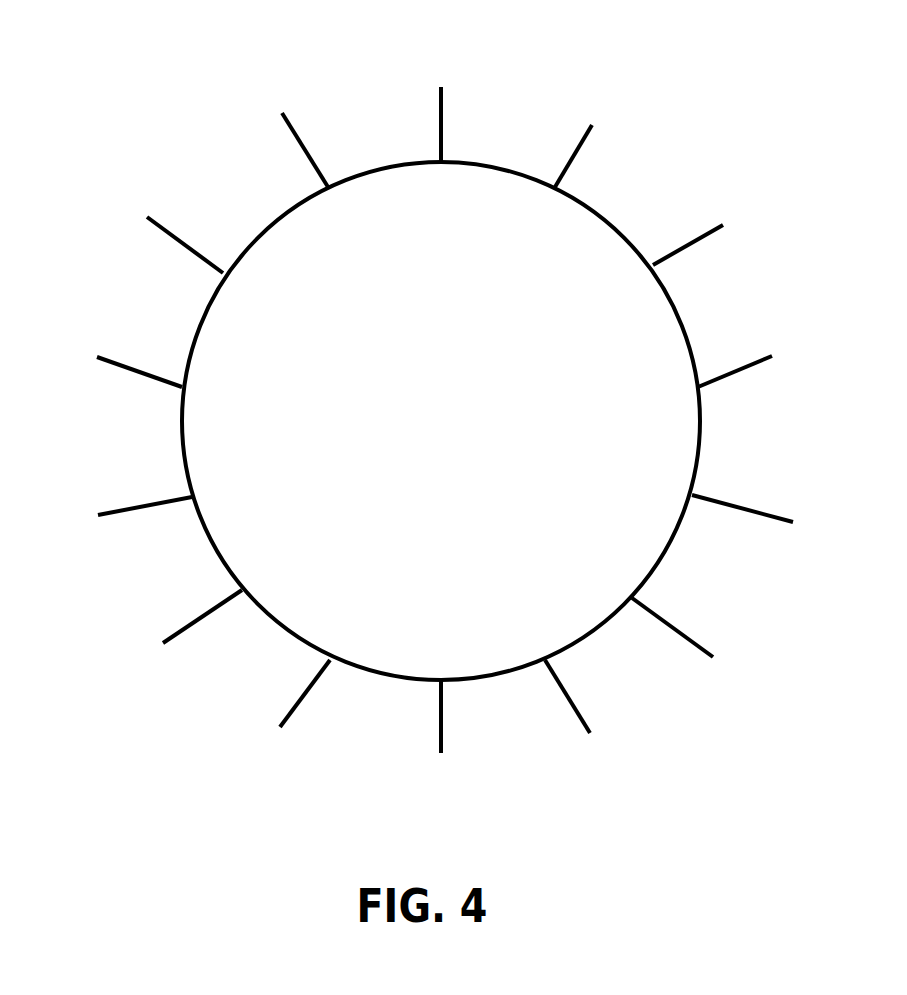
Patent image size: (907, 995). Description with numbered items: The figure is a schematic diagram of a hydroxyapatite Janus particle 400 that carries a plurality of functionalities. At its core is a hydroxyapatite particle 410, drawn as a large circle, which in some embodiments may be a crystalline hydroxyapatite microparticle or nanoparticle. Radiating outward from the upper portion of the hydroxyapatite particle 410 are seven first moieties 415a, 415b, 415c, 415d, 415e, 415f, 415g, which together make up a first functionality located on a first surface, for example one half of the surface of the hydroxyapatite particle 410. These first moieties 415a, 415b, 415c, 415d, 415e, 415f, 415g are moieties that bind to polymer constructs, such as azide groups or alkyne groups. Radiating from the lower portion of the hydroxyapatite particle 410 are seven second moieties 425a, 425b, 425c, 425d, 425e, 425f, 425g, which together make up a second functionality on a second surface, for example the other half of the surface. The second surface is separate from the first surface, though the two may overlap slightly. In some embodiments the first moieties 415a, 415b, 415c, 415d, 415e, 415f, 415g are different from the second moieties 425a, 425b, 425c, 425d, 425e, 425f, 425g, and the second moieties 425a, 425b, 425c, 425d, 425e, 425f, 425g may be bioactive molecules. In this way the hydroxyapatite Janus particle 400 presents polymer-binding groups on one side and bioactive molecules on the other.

The hydroxyapatite Janus particle 400 is at (790, 101).
The hydroxyapatite particle 410 is at (538, 452).
The first moiety 415a is at (115, 355).
The first moiety 415b is at (157, 226).
The first moiety 415c is at (281, 127).
The first moiety 415d is at (441, 102).
The first moiety 415e is at (595, 130).
The first moiety 415f is at (714, 223).
The first moiety 415g is at (761, 351).
The second moiety 425a is at (122, 528).
The second moiety 425b is at (176, 642).
The second moiety 425c is at (281, 719).
The second moiety 425d is at (439, 739).
The second moiety 425e is at (589, 722).
The second moiety 425f is at (695, 650).
The second moiety 425g is at (770, 528).